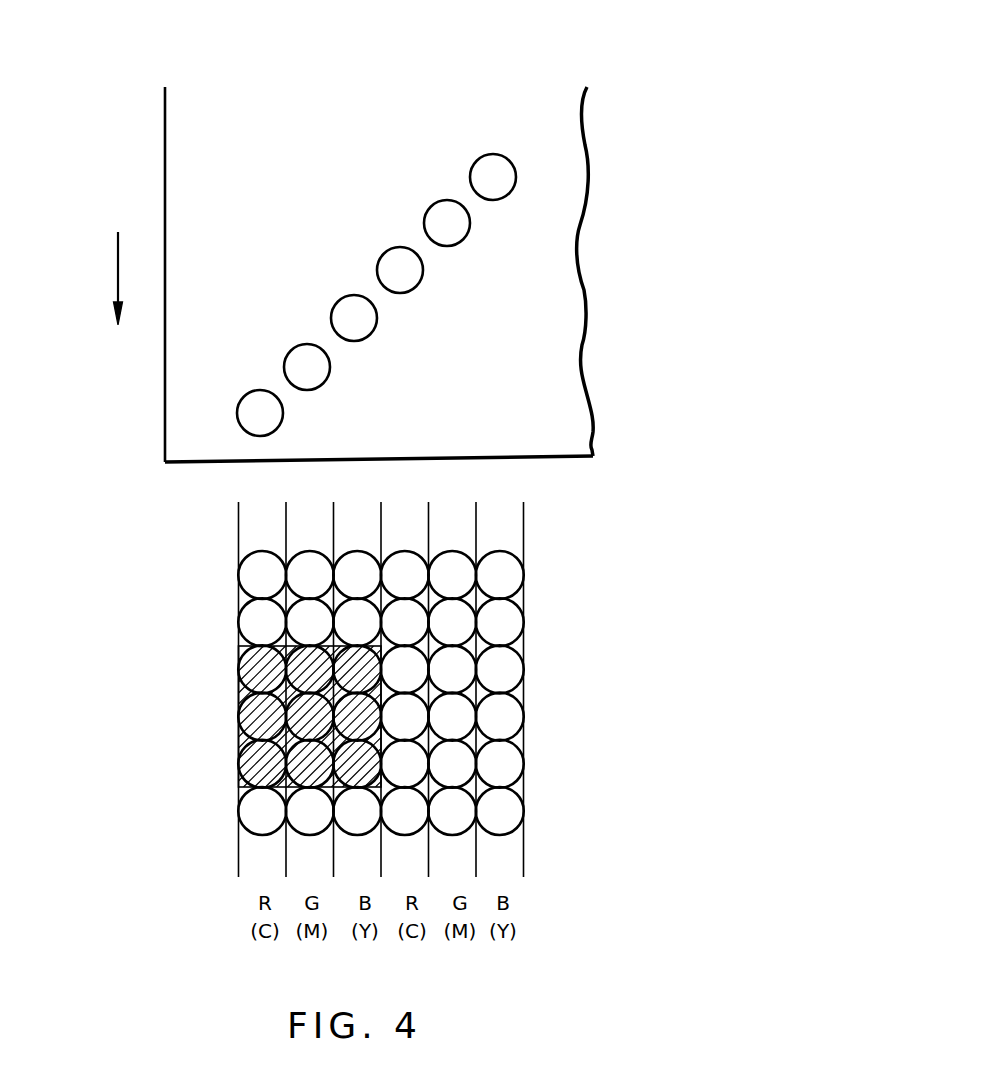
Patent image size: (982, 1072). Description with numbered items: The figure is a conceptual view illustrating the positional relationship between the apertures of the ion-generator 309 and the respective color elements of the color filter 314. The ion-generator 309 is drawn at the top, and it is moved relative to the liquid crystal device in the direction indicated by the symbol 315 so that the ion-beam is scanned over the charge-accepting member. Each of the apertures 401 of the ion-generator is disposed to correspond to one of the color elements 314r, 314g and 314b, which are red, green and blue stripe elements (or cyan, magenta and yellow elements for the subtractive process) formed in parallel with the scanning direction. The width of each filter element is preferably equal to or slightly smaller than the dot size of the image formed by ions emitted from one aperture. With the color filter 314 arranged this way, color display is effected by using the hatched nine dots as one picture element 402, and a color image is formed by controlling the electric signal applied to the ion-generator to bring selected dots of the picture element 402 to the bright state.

The ion-generator 309 is at (637, 26).
The apertures of the ion-generator 401 is at (500, 168).
The direction of movement of the ion-generator 315 is at (118, 257).
The color filter 314 is at (318, 689).
The red color element 314r is at (252, 508).
The green color element 314g is at (300, 520).
The blue color element 314b is at (357, 527).
The picture element 402 is at (252, 728).